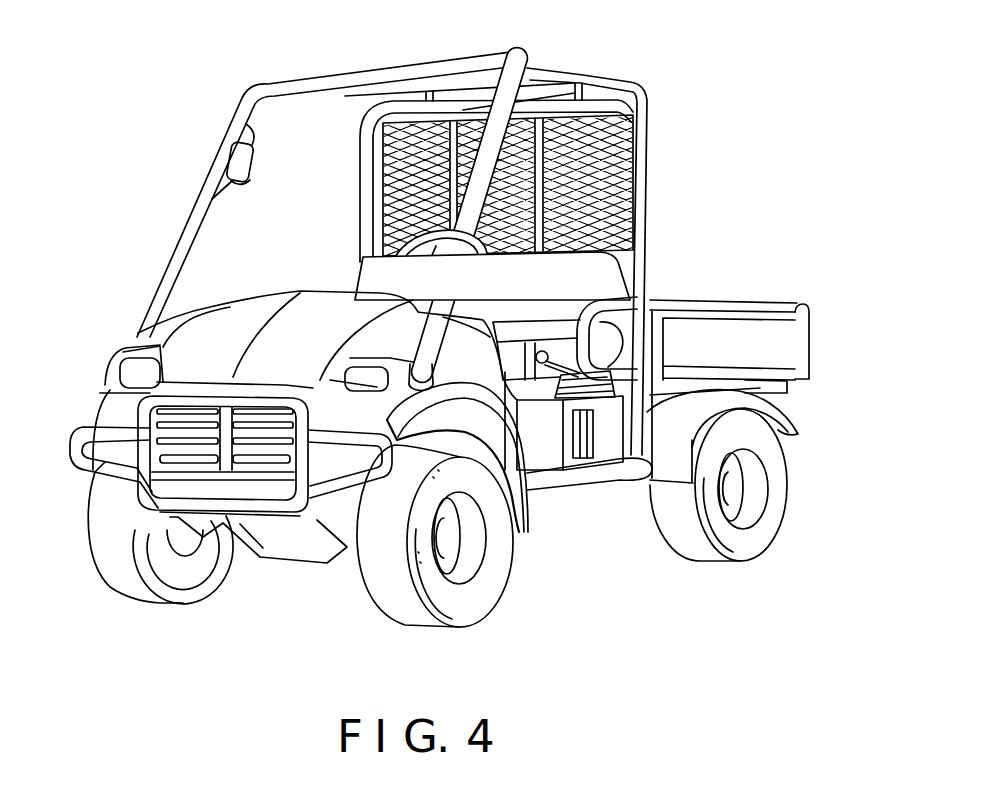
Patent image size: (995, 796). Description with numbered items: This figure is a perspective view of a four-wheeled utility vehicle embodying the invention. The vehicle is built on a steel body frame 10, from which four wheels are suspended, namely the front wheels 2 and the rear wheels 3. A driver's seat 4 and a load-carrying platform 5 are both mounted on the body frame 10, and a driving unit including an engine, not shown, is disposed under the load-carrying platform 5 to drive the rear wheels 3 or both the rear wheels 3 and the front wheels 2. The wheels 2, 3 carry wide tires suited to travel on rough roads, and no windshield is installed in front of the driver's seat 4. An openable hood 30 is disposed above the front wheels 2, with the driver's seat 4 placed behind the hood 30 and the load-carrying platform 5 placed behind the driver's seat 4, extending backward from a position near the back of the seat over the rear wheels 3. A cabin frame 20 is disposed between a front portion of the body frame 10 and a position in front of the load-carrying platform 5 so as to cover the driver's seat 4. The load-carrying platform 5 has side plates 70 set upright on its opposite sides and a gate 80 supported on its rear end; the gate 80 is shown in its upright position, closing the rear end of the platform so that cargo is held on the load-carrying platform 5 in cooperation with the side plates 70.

The cabin frame 20 is at (228, 126).
The openable hood 30 is at (264, 308).
The driver's seat 4 is at (563, 267).
The load-carrying platform 5 is at (703, 300).
The side plates 70 is at (777, 337).
The gate 80 is at (800, 357).
The body frame 10 is at (590, 473).
The front wheels 2 is at (490, 577).
The rear wheels 3 is at (773, 513).